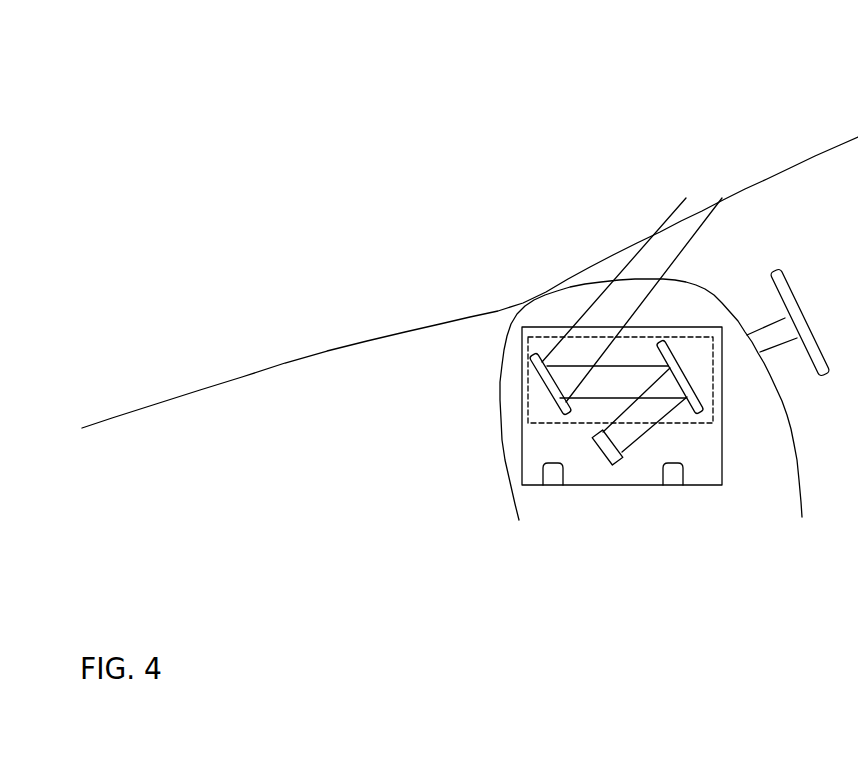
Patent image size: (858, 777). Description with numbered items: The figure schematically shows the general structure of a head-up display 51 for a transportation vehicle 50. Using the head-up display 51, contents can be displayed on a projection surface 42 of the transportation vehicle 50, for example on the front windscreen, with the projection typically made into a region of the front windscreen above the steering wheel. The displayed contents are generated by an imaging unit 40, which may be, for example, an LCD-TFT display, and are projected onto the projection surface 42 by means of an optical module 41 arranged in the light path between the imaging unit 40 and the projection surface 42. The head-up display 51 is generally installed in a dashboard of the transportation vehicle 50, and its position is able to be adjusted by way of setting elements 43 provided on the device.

The imaging unit 40 is at (605, 452).
The optical module 41 is at (693, 423).
The projection surface 42 is at (760, 181).
The setting elements 43 is at (613, 530).
The transportation vehicle 50 is at (327, 350).
The head-up display 51 is at (522, 462).